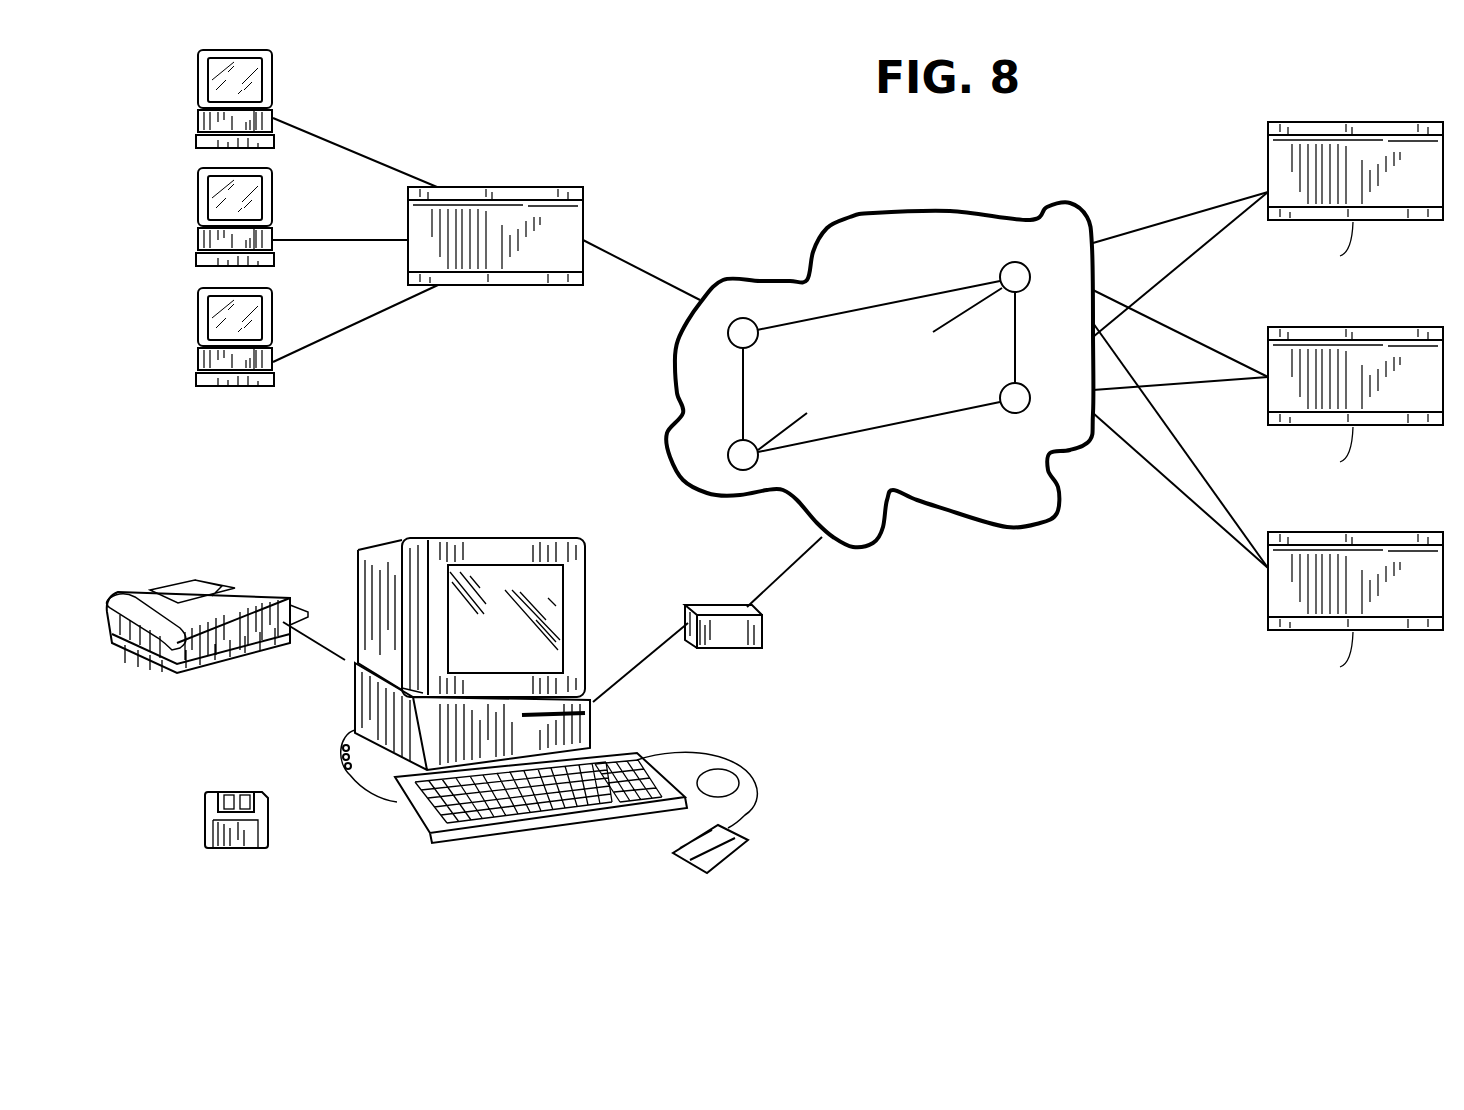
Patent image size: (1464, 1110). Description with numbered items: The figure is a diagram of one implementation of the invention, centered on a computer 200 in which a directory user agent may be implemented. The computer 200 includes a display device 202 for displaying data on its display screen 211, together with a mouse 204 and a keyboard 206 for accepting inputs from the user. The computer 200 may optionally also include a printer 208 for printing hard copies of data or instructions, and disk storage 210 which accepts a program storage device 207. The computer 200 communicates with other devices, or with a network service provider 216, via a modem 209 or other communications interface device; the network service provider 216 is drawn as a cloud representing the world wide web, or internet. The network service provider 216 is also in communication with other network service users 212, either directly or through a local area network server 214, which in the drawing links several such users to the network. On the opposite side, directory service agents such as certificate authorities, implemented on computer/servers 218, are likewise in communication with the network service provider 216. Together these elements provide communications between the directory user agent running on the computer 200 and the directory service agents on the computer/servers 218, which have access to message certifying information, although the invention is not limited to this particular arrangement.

The computer 200 is at (298, 508).
The display device 202 is at (501, 591).
The mouse 204 is at (740, 852).
The keyboard 206 is at (410, 823).
The program storage device 207 is at (205, 812).
The printer 208 is at (163, 580).
The modem 209 is at (760, 647).
The disk storage 210 is at (590, 727).
The display screen 211 is at (543, 588).
The network service users 212 is at (198, 96).
The local area network server 214 is at (532, 186).
The network service provider 216 is at (833, 242).
The computer/servers 218 is at (1408, 120).